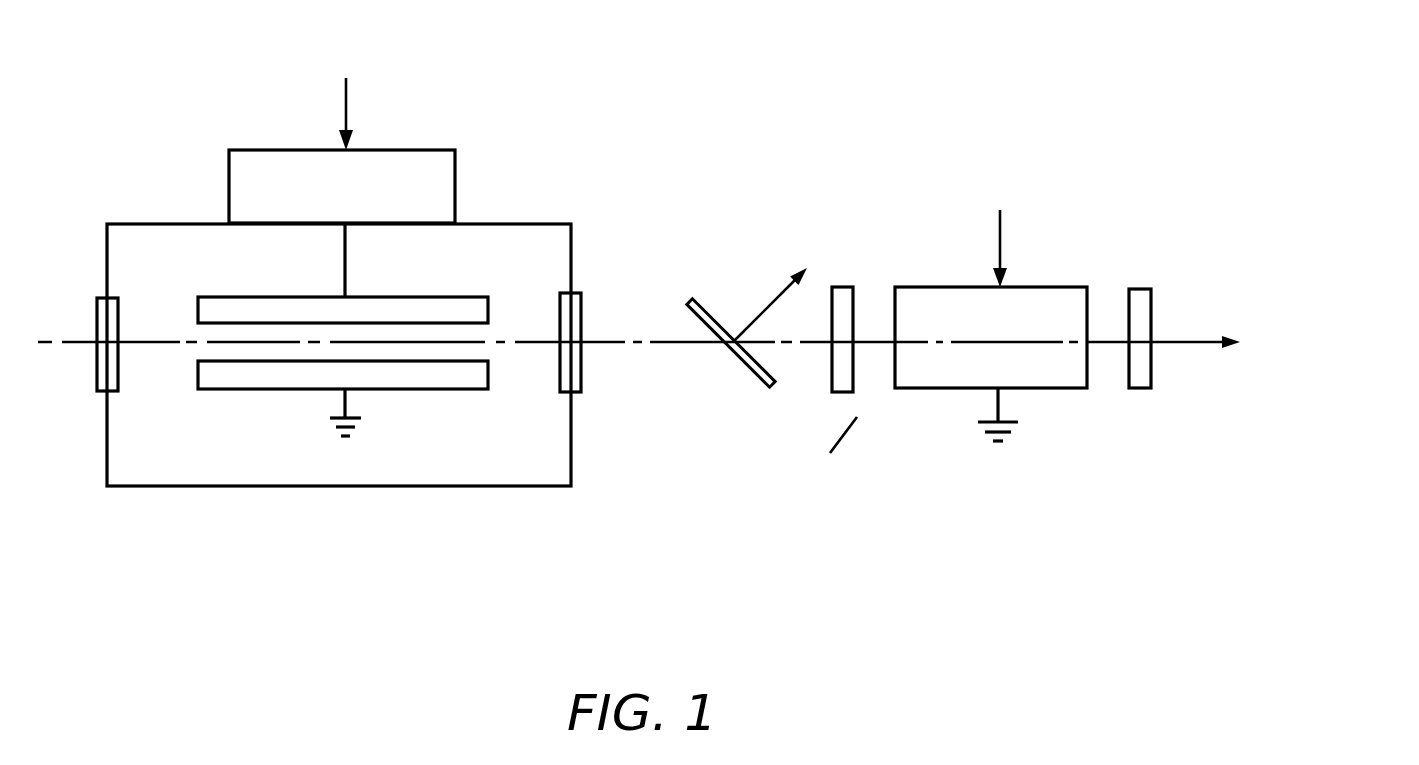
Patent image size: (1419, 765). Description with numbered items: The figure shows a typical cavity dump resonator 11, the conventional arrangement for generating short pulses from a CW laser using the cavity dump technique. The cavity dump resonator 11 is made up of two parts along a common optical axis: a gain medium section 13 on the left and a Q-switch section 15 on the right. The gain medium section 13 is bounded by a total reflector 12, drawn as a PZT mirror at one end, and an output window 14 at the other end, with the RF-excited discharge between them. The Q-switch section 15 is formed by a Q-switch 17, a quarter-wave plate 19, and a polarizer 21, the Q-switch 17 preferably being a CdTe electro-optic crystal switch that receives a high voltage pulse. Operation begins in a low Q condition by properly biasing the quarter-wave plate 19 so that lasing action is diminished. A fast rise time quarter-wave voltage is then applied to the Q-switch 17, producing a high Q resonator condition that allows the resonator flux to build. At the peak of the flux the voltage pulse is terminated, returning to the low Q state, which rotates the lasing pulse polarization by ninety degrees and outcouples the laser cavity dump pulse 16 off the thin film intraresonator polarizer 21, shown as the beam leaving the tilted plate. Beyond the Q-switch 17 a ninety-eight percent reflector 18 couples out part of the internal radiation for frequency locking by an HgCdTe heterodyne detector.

The cavity dump resonator 11 is at (733, 95).
The total reflector 12 is at (97, 311).
The gain medium section 13 is at (500, 139).
The output window 14 is at (581, 310).
The Q-switch section 15 is at (943, 375).
The laser cavity dump pulse 16 is at (770, 305).
The Q-switch 17 is at (1037, 287).
The 98% reflector 18 is at (1140, 289).
The quarter-wave plate 19 is at (843, 287).
The polarizer 21 is at (692, 301).